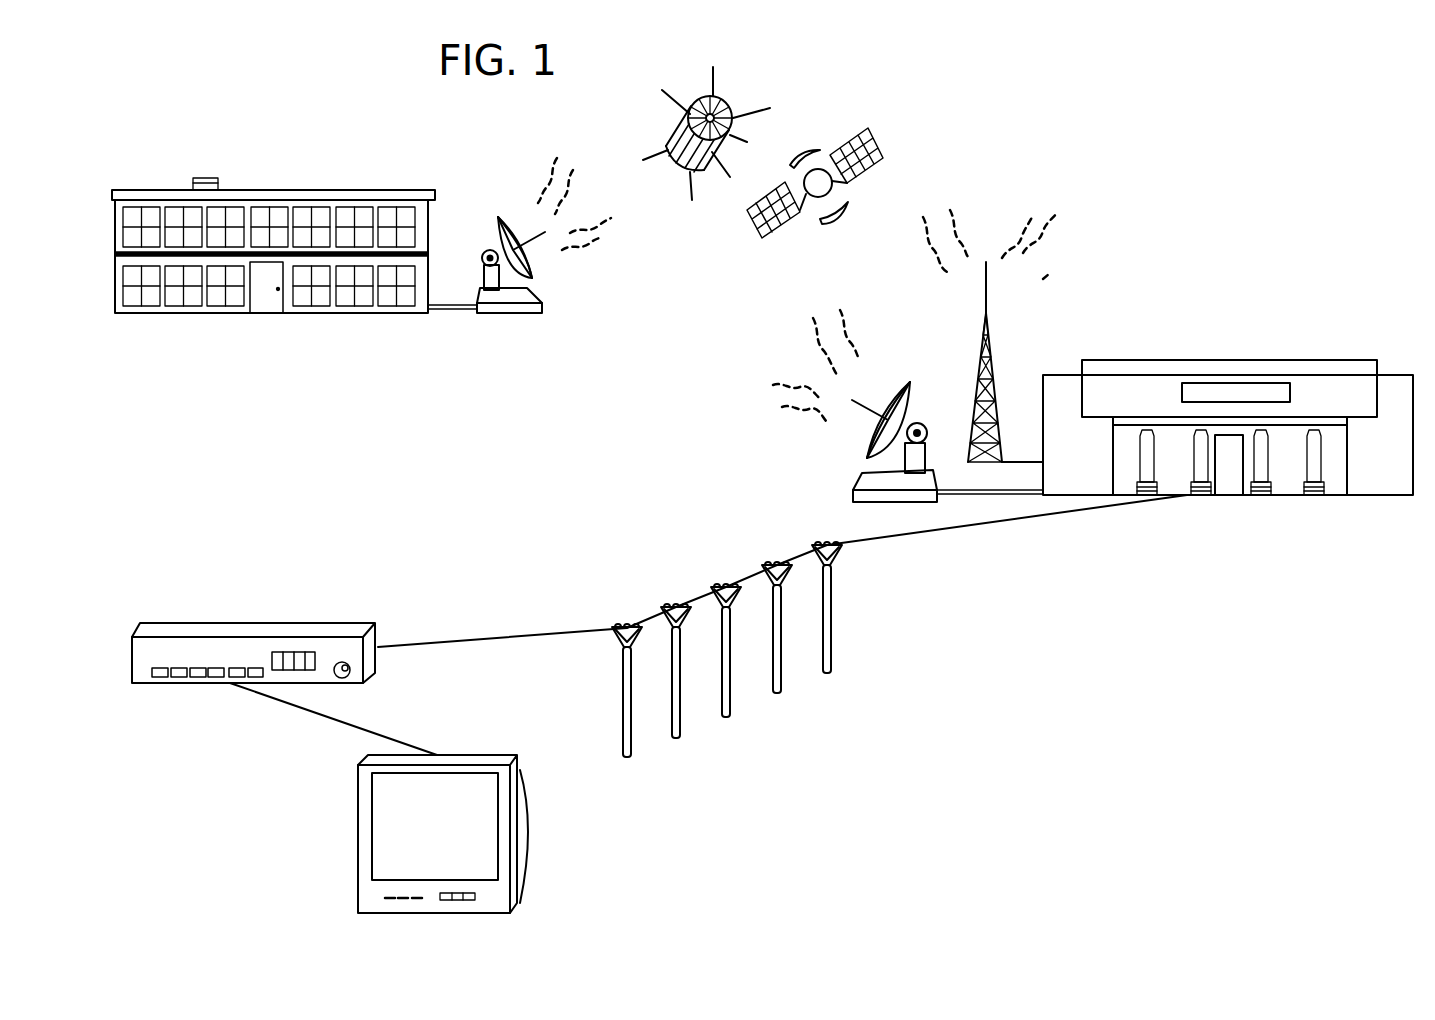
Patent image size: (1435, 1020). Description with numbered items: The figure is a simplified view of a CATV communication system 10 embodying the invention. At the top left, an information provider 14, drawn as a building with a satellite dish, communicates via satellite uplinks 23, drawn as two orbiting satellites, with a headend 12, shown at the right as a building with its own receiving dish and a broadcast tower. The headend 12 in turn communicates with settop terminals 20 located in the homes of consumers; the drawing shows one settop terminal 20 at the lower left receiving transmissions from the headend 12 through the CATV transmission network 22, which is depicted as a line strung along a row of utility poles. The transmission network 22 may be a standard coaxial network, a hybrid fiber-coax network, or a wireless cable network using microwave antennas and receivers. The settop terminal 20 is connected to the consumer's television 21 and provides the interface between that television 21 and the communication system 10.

The CATV communication system 10 is at (1162, 197).
The headend 12 is at (1276, 361).
The information provider 14 is at (296, 190).
The settop terminal 20 is at (165, 623).
The television 21 is at (527, 790).
The CATV transmission network 22 is at (590, 630).
The satellite uplink 23 is at (678, 177).